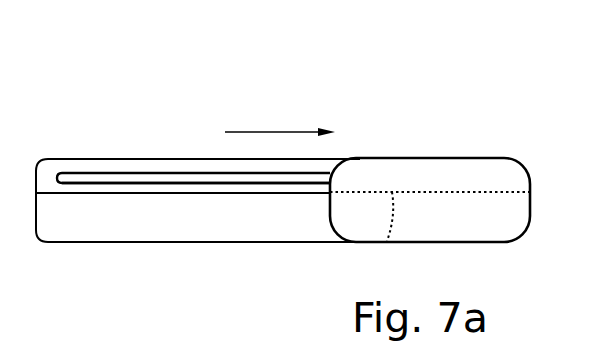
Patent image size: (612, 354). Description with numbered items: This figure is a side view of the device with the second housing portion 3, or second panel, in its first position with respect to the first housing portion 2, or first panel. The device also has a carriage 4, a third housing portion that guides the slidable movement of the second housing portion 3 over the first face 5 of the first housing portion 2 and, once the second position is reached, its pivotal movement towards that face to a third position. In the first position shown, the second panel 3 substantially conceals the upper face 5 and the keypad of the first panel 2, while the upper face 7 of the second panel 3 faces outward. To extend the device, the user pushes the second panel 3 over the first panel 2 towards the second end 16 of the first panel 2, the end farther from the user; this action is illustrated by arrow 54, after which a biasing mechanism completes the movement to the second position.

The first housing portion 2 is at (92, 233).
The second housing portion 3 is at (93, 168).
The first face 5 is at (137, 177).
The first face of second panel 7 is at (180, 149).
The arrow 54 is at (284, 132).
The carriage 4 is at (368, 163).
The second end of first panel 16 is at (413, 212).